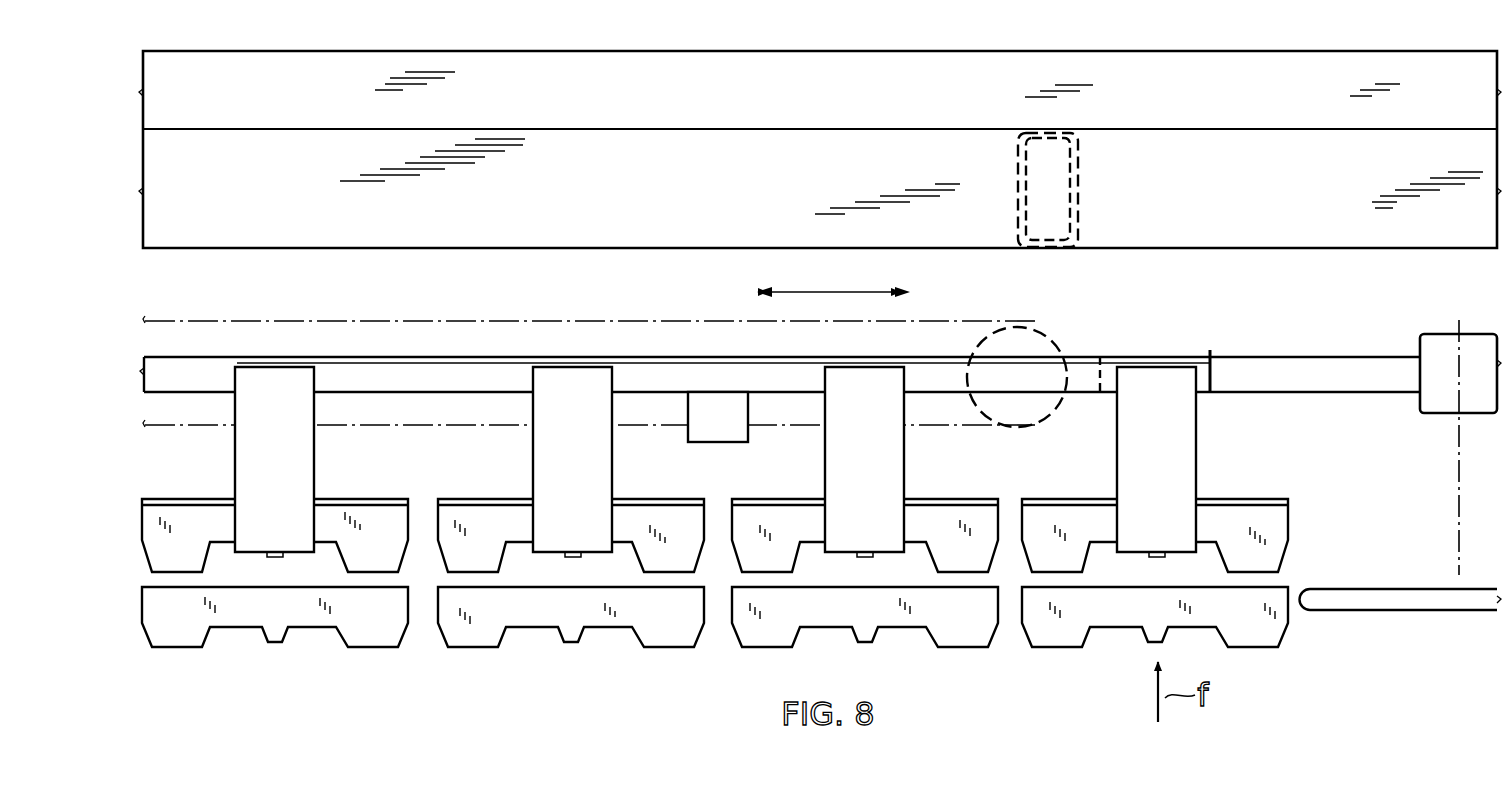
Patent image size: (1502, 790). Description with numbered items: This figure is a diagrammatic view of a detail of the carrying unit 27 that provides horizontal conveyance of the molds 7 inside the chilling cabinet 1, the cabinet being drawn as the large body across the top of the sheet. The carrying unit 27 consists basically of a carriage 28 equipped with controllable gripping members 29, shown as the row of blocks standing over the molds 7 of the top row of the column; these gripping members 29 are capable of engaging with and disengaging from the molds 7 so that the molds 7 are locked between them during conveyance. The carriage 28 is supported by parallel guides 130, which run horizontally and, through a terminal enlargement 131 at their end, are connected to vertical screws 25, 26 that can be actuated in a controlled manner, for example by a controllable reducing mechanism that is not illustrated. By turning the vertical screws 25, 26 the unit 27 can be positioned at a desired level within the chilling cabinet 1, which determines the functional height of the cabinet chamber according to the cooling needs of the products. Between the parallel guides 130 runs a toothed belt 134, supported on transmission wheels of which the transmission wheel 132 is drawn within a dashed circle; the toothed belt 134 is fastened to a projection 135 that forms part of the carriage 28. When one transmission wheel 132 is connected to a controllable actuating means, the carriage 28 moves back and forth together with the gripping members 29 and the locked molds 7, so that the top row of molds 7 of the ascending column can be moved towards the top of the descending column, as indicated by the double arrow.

The chilling cabinet 1 is at (1330, 195).
The mold 7 is at (463, 530).
The vertical screw 25 is at (1456, 470).
The vertical screw 26 is at (1401, 599).
The carrying unit 27 is at (612, 343).
The carriage 28 is at (1083, 378).
The gripping member 29 is at (868, 480).
The parallel guide 130 is at (1263, 375).
The terminal enlargement 131 is at (1437, 355).
The transmission wheel 132 is at (996, 342).
The toothed belt 134 is at (472, 288).
The projection 135 is at (716, 414).